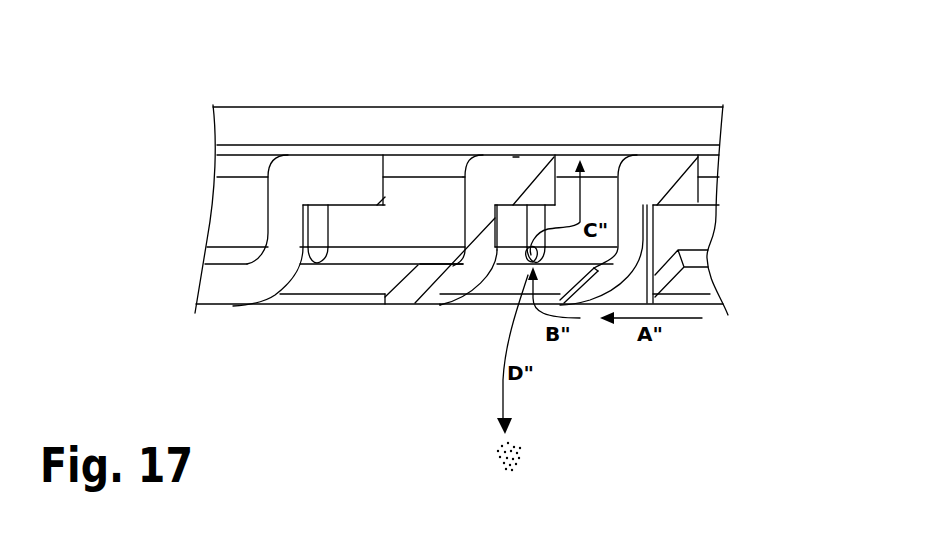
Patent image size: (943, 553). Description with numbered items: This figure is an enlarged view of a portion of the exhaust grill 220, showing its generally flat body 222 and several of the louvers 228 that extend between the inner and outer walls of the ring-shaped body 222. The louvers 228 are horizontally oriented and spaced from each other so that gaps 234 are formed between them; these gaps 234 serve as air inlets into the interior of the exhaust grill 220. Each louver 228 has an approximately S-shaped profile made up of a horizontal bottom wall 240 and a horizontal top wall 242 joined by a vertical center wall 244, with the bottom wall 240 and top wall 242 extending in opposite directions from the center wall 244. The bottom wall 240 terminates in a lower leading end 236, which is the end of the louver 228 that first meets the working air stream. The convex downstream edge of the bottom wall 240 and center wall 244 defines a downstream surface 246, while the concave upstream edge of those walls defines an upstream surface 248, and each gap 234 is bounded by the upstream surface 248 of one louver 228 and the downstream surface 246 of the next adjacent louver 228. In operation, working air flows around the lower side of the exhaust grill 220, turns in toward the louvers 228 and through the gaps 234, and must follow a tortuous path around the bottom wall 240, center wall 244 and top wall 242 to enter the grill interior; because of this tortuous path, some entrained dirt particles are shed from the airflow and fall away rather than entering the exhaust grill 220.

The exhaust grill 220 is at (178, 75).
The body 222 is at (701, 100).
The louvers 228 is at (289, 147).
The gaps 234 is at (316, 284).
The lower leading end 236 is at (373, 307).
The horizontal bottom wall 240 is at (420, 306).
The horizontal top wall 242 is at (516, 156).
The vertical center wall 244 is at (466, 204).
The downstream surface 246 is at (476, 290).
The upstream surface 248 is at (427, 263).